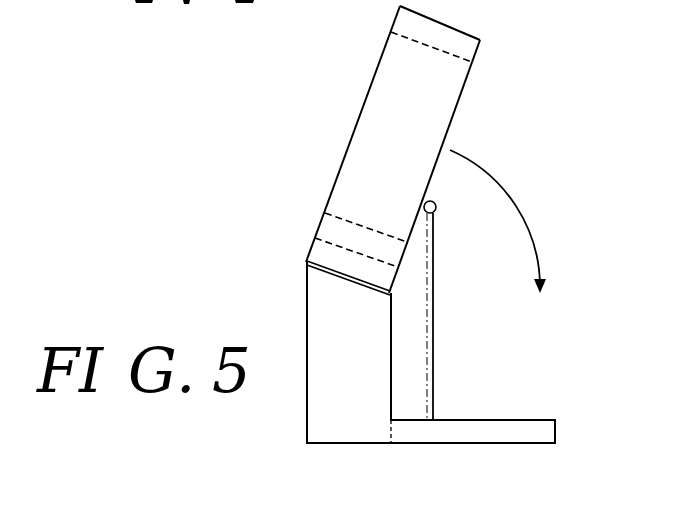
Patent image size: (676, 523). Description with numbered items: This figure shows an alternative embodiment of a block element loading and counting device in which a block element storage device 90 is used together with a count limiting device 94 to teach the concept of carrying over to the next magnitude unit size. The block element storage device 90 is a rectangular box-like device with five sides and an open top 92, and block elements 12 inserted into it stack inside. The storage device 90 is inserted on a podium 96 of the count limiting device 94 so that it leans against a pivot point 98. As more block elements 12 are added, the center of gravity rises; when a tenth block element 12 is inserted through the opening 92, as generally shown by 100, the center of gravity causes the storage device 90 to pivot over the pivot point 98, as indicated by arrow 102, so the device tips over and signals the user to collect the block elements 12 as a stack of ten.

The block element 12 is at (342, 228).
The block element storage device 90 is at (363, 108).
The open top 92 is at (453, 23).
The count limiting device 94 is at (513, 378).
The podium 96 is at (338, 283).
The pivot point 98 is at (435, 211).
The insertion of tenth block element 100 is at (467, 52).
The arrow 102 is at (533, 189).